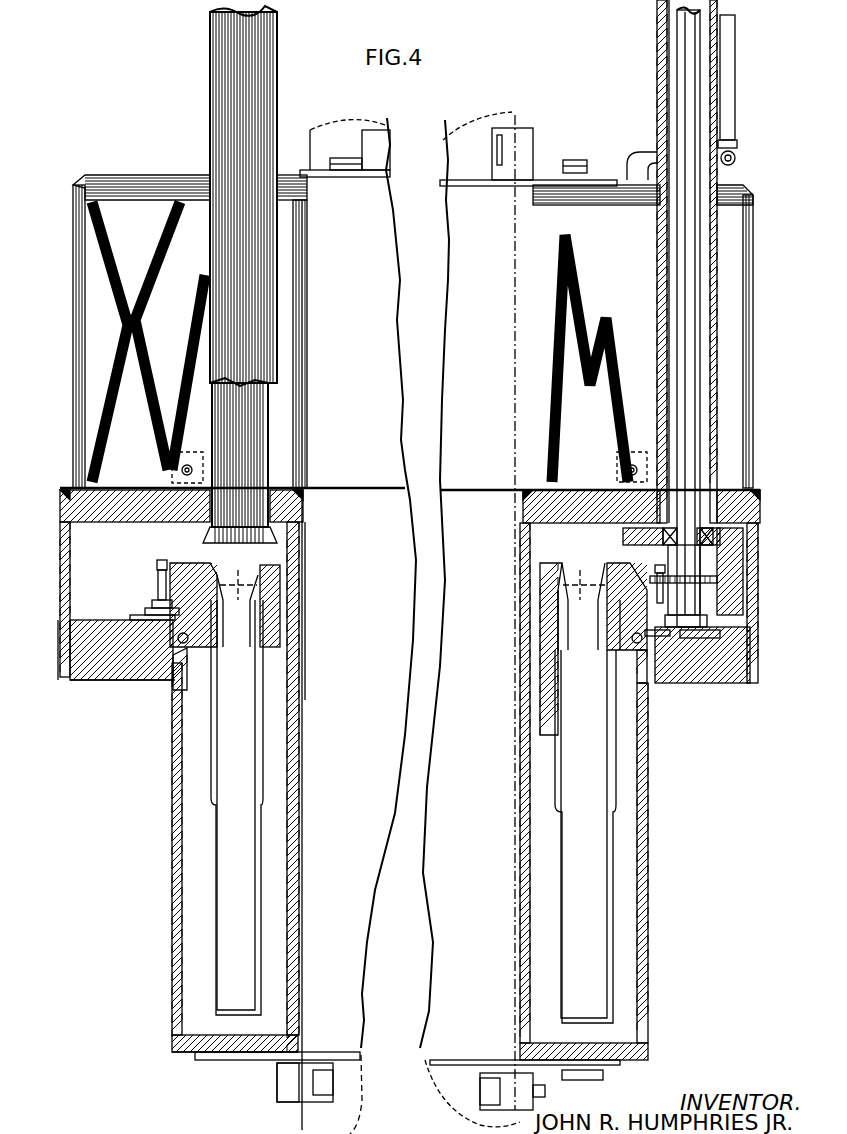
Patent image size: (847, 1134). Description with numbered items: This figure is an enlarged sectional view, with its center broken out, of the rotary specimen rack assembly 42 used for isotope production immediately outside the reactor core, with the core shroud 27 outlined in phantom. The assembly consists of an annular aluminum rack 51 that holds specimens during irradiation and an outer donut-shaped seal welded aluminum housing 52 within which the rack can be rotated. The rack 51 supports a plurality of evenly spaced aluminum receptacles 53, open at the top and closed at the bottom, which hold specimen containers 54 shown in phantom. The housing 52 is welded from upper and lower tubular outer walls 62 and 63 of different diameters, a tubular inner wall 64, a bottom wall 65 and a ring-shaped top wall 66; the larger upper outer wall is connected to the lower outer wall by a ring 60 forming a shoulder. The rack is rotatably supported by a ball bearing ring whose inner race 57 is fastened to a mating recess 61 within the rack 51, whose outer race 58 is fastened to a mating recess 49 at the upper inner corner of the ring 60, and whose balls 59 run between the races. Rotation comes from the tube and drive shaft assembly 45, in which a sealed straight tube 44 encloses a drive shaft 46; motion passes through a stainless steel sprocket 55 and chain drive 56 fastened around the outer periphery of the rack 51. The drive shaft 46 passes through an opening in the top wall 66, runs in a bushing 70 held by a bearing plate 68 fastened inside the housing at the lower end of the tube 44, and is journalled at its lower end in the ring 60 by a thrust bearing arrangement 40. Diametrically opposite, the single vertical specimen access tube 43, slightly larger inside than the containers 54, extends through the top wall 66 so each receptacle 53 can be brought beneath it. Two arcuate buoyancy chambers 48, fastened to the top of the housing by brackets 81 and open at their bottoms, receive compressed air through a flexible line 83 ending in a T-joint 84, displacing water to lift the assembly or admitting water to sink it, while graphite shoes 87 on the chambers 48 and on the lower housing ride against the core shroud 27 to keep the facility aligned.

The core shroud 27 is at (340, 152).
The thrust bearing arrangement 40 is at (705, 650).
The rotary specimen rack assembly 42 is at (125, 722).
The specimen access tube 43 is at (218, 298).
The sealed straight tube 44 is at (660, 315).
The tube and drive shaft assembly 45 is at (652, 52).
The drive shaft 46 is at (680, 288).
The buoyancy chambers 48 is at (73, 282).
The mating recess 49 is at (130, 625).
The annular aluminum rack 51 is at (190, 563).
The housing 52 is at (58, 527).
The aluminum receptacles 53 is at (258, 870).
The specimen containers 54 is at (282, 568).
The stainless steel sprocket 55 is at (705, 580).
The chain drive 56 is at (157, 562).
The inner race 57 is at (172, 688).
The outer race 58 is at (160, 650).
The balls 59 is at (178, 634).
The ring 60 is at (80, 680).
The mating recess 61 is at (195, 638).
The upper tubular outer wall 62 is at (60, 622).
The lower tubular outer wall 63 is at (176, 826).
The tubular inner wall 64 is at (303, 540).
The bottom wall 65 is at (185, 1052).
The ring-shaped top wall 66 is at (97, 525).
The bearing plate 68 is at (743, 512).
The bushing 70 is at (657, 541).
The brackets 81 is at (198, 450).
The flexible line 83 is at (735, 92).
The T-joint 84 is at (740, 162).
The graphite shoes 87 is at (380, 148).